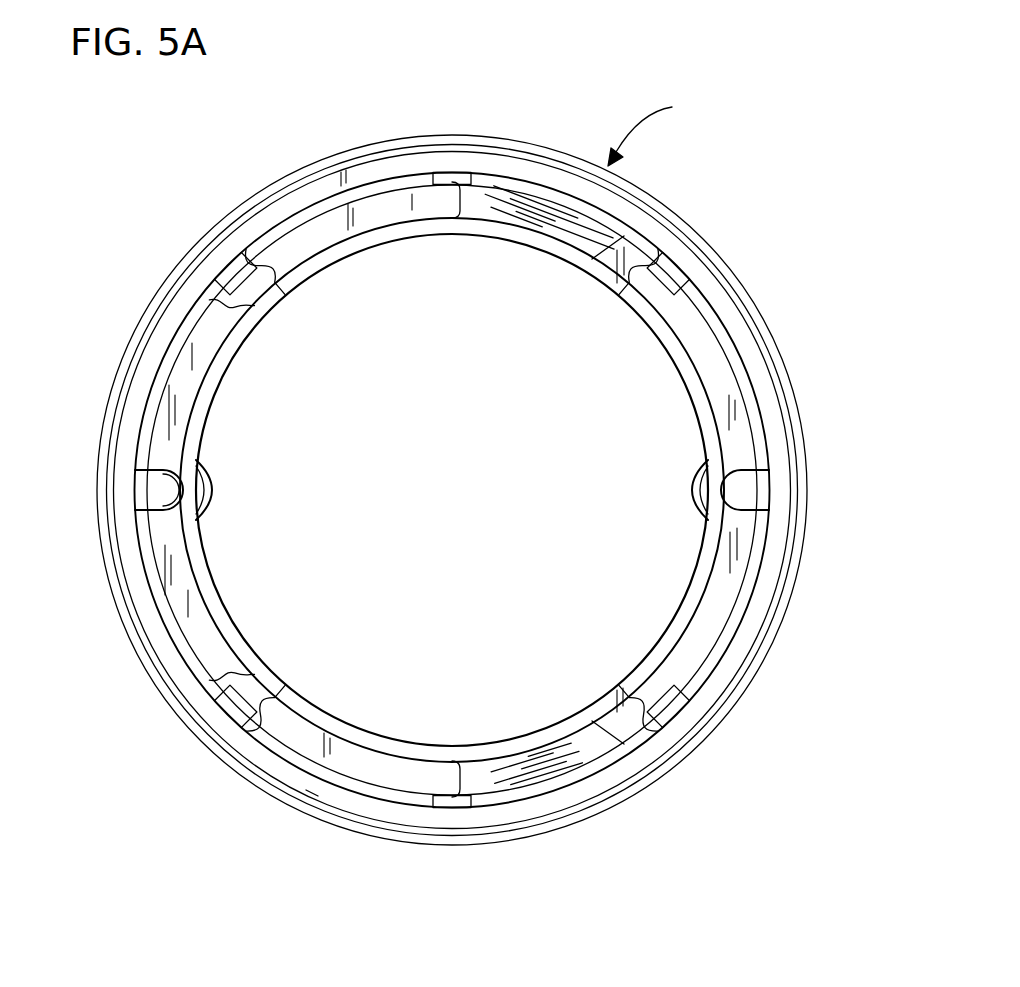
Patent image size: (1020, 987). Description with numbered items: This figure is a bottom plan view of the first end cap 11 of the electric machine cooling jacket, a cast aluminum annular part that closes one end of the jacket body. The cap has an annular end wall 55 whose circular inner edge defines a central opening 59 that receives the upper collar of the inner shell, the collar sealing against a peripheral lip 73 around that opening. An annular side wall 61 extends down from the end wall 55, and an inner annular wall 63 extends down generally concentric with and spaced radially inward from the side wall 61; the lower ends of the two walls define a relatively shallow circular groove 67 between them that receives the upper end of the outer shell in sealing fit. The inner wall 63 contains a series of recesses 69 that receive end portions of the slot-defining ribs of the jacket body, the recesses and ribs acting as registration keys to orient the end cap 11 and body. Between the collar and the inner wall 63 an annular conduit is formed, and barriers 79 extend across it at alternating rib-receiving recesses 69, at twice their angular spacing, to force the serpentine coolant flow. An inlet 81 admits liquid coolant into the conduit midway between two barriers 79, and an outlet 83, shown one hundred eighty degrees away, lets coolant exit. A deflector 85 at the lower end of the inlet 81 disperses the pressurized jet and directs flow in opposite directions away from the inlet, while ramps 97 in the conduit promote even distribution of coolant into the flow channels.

The first end cap 11 is at (652, 128).
The annular end wall 55 is at (722, 425).
The central opening 59 is at (218, 578).
The annular side wall 61 is at (798, 387).
The inner annular wall 63 is at (315, 205).
The circular groove 67 is at (318, 794).
The recesses 69 is at (455, 176).
The peripheral lip 73 is at (455, 217).
The barriers 79 is at (270, 298).
The inlet 81 is at (207, 487).
The outlet 83 is at (692, 489).
The deflector 85 is at (153, 491).
The ramps 97 is at (594, 258).